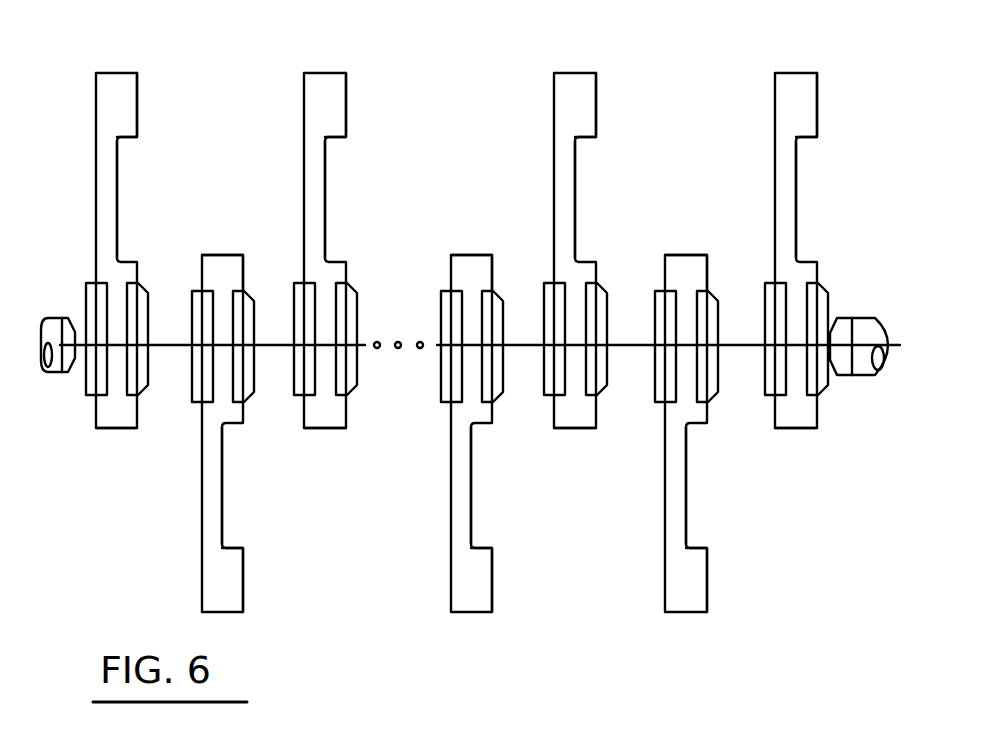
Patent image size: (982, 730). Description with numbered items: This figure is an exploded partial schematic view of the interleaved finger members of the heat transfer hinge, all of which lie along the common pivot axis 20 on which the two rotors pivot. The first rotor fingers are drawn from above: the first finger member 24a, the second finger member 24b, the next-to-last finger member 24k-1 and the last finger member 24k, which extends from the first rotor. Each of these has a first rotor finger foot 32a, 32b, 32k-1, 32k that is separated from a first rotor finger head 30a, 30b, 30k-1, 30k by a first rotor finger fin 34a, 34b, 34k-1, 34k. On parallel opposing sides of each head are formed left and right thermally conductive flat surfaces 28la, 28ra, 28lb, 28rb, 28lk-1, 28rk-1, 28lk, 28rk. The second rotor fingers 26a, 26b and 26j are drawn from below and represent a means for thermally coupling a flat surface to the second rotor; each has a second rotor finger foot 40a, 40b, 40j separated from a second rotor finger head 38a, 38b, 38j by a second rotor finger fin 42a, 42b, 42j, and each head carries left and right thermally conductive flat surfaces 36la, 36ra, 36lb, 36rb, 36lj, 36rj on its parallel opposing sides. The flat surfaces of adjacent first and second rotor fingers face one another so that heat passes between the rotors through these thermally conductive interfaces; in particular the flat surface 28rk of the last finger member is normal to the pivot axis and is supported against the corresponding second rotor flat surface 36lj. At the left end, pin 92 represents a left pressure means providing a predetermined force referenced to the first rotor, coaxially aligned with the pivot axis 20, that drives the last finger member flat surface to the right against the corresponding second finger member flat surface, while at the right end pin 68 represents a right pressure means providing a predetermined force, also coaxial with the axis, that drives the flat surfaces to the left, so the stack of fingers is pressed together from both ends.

The pivot axis 20 is at (153, 345).
The pin 92 is at (48, 320).
The pin 68 is at (870, 318).
The first rotor finger 24k is at (95, 90).
The first rotor finger foot 32k is at (127, 116).
The first rotor finger fin 34k is at (112, 193).
The first rotor finger head 30k is at (113, 430).
The left thermally conductive flat surface 28lk is at (88, 370).
The right thermally conductive flat surface 28rk is at (148, 370).
The first rotor finger 24k-1 is at (303, 98).
The first rotor finger foot 32k-1 is at (340, 112).
The first rotor finger fin 34k-1 is at (322, 193).
The first rotor finger head 30k-1 is at (327, 423).
The left thermally conductive flat surface 28lk-1 is at (292, 382).
The right thermally conductive flat surface 28rk-1 is at (357, 368).
The first rotor finger 24b is at (553, 88).
The first rotor finger foot 32b is at (585, 120).
The first rotor finger fin 34b is at (565, 212).
The first rotor finger head 30b is at (565, 427).
The left thermally conductive flat surface 28lb is at (538, 368).
The right thermally conductive flat surface 28rb is at (608, 373).
The first rotor finger 24a is at (773, 87).
The first rotor finger foot 32a is at (807, 120).
The first rotor finger fin 34a is at (793, 207).
The first rotor finger head 30a is at (787, 430).
The left thermally conductive flat surface 28la is at (763, 367).
The right thermally conductive flat surface 28ra is at (827, 375).
The second rotor finger 26j is at (202, 587).
The second rotor finger fin 42j is at (222, 517).
The second rotor finger foot 40j is at (233, 590).
The left thermally conductive flat surface 36lj is at (192, 297).
The right thermally conductive flat surface 36rj is at (254, 300).
The second rotor finger head 38j is at (222, 257).
The second rotor finger 26b is at (452, 593).
The second rotor finger fin 42b is at (467, 517).
The second rotor finger foot 40b is at (485, 575).
The left thermally conductive flat surface 36lb is at (438, 312).
The right thermally conductive flat surface 36rb is at (533, 285).
The second rotor finger head 38b is at (468, 250).
The second rotor finger 26a is at (665, 600).
The second rotor finger fin 42a is at (677, 498).
The second rotor finger foot 40a is at (697, 573).
The left thermally conductive flat surface 36la is at (655, 322).
The right thermally conductive flat surface 36ra is at (750, 283).
The second rotor finger head 38a is at (705, 250).